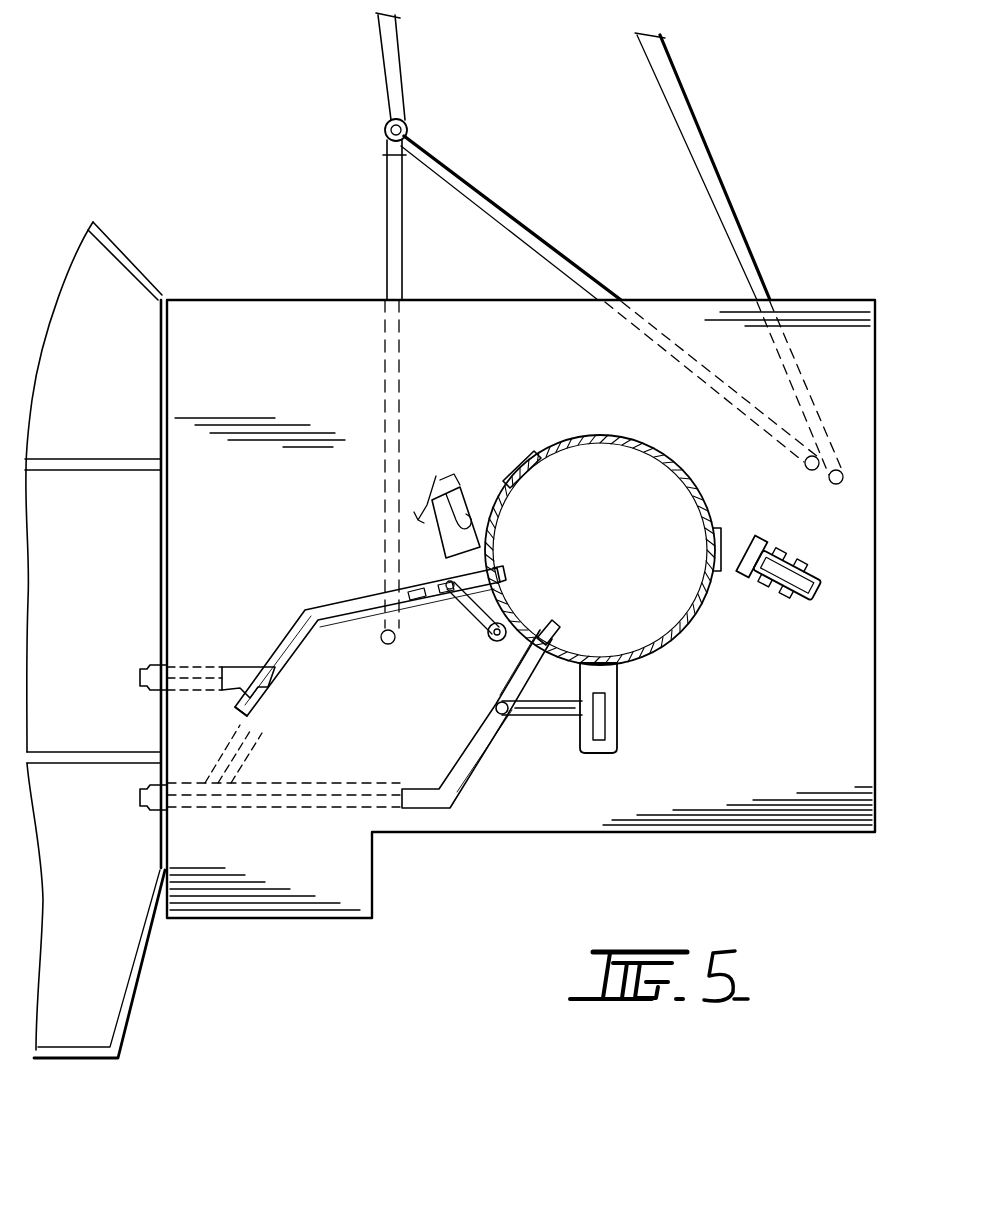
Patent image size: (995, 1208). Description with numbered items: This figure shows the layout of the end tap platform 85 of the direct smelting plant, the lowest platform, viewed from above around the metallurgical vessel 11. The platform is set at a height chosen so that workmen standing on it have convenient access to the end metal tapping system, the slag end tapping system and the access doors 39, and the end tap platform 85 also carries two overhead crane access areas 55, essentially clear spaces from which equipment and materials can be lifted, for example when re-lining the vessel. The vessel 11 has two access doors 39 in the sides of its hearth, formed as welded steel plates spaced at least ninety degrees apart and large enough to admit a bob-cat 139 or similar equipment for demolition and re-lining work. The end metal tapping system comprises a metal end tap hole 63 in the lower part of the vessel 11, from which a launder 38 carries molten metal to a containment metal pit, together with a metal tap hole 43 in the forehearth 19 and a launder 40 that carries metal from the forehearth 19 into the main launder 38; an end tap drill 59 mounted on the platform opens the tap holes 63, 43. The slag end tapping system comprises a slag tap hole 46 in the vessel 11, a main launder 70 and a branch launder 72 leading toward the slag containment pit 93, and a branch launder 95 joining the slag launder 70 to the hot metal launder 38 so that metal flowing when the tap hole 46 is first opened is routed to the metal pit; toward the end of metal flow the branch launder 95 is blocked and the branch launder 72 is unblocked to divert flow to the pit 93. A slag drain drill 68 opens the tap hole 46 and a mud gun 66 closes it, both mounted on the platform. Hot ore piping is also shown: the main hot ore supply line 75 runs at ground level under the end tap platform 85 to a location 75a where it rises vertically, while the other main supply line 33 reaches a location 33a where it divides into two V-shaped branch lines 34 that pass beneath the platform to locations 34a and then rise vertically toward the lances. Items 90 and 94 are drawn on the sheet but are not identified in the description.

The metallurgical vessel 11 is at (597, 436).
The forehearth 19 is at (613, 716).
The main hot ore supply line 33 is at (405, 68).
The branching location 33a is at (384, 130).
The branch lines 34 is at (505, 208).
The branch line locations 34a is at (383, 645).
The launder 38 is at (420, 795).
The access doors 39 is at (530, 470).
The launder 40 is at (524, 724).
The metal tap hole 43 is at (576, 724).
The slag tap hole 46 is at (505, 578).
The overhead crane access areas 55 is at (290, 366).
The end tap drill 59 is at (494, 706).
The metal end tap hole 63 is at (548, 637).
The mud gun 66 is at (458, 485).
The slag drain drill 68 is at (476, 636).
The main launder 70 is at (305, 616).
The branch launder 72 is at (230, 680).
The main hot ore supply line 75 is at (700, 158).
The vertical riser location 75a is at (832, 484).
The end tap platform 85 is at (183, 335).
The lower bumper section 90 is at (100, 887).
The containment pit 93 is at (106, 616).
The upper bumper section 94 is at (106, 410).
The branch launder 95 is at (255, 710).
The bob-cat 139 is at (770, 575).